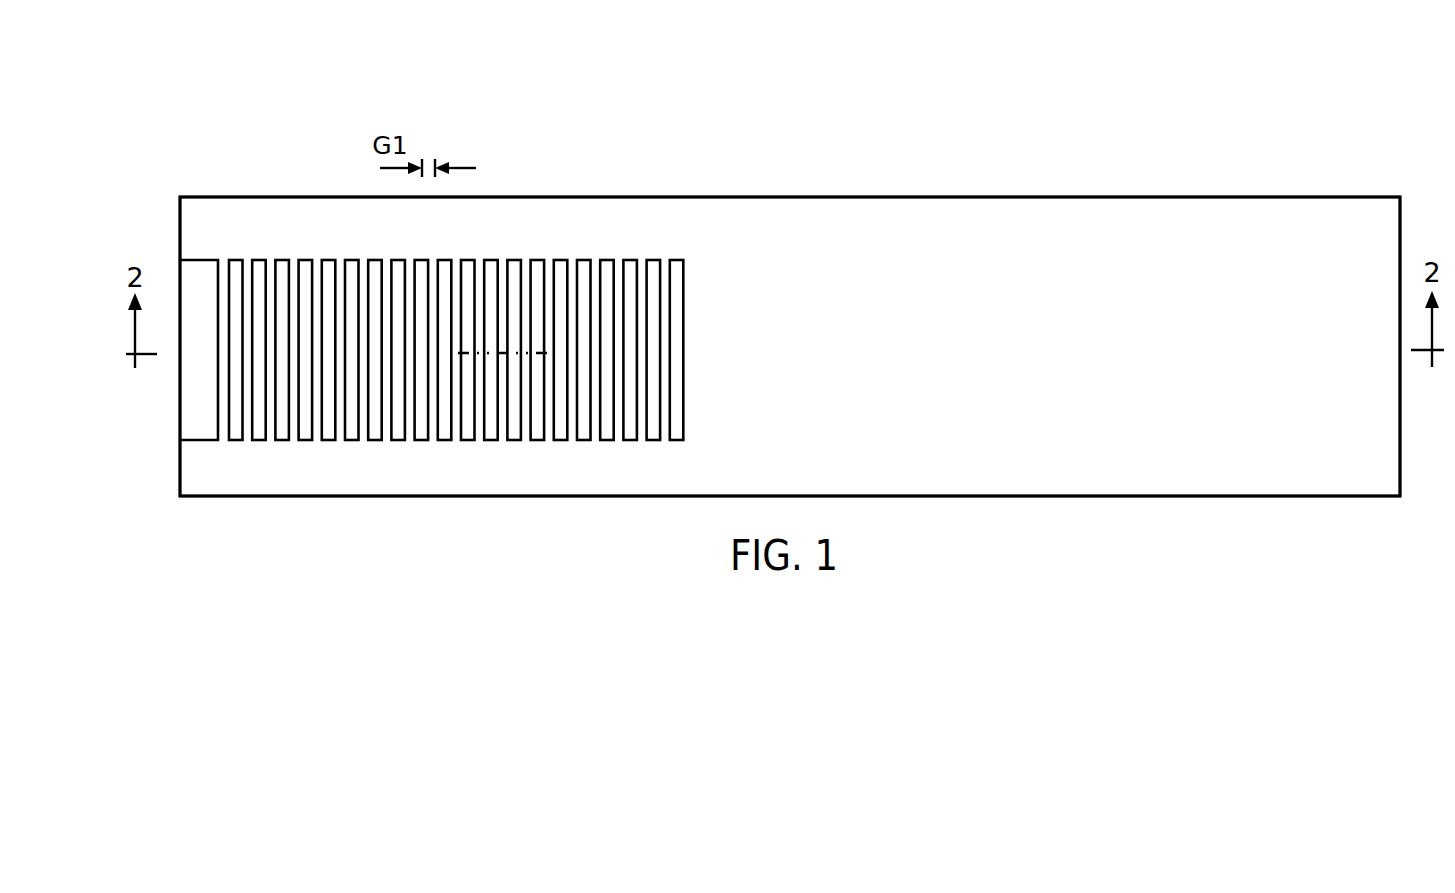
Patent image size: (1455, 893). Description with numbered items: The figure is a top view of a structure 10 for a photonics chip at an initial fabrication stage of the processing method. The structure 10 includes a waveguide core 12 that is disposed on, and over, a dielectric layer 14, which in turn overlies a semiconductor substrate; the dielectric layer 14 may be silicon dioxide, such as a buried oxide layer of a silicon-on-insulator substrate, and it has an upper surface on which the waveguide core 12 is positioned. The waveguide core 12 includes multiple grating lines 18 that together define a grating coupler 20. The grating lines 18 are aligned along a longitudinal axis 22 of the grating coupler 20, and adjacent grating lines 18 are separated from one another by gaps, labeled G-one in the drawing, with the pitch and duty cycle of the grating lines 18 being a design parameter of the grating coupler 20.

The structure 10 is at (200, 60).
The waveguide core 12 is at (207, 405).
The dielectric layer 14 is at (238, 478).
The grating lines 18 is at (652, 346).
The grating coupler 20 is at (712, 265).
The longitudinal axis 22 is at (500, 352).